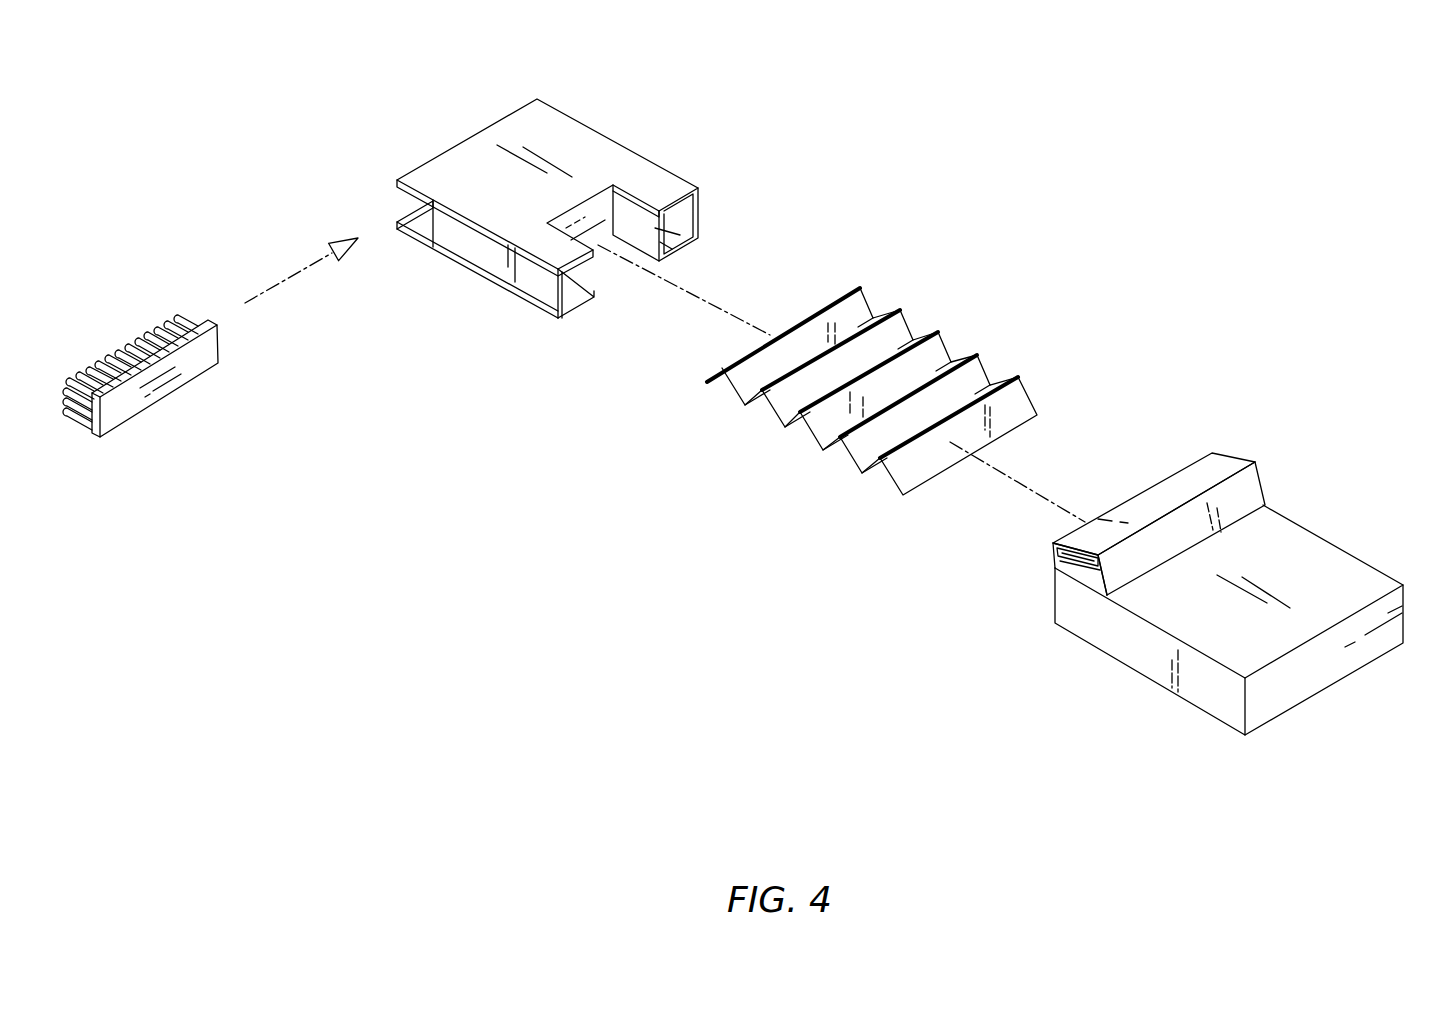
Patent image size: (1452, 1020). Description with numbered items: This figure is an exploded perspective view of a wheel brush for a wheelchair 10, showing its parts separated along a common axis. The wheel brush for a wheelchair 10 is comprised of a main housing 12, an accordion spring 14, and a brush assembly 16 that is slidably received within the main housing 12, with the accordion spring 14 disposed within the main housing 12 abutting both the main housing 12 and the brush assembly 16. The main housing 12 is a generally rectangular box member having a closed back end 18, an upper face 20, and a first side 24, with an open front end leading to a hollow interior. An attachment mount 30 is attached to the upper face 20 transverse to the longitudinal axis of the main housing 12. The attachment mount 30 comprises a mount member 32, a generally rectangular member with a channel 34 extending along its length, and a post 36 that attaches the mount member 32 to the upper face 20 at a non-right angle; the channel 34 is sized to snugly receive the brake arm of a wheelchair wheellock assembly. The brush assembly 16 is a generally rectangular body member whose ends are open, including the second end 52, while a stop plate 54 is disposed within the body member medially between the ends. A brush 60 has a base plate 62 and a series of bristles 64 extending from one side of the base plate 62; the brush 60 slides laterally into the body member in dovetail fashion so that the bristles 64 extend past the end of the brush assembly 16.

The wheel brush for a wheelchair 10 is at (516, 644).
The main housing 12 is at (1333, 516).
The accordion spring 14 is at (951, 342).
The brush assembly 16 is at (610, 152).
The closed back end 18 is at (1295, 683).
The upper face 20 is at (1337, 572).
The first side 24 is at (1208, 688).
The attachment mount 30 is at (1199, 458).
The mount member 32 is at (1148, 503).
The channel 34 is at (1072, 558).
The post 36 is at (1098, 580).
The second end 52 is at (700, 213).
The stop plate 54 is at (605, 215).
The brush 60 is at (177, 405).
The base plate 62 is at (212, 348).
The bristles 64 is at (165, 320).